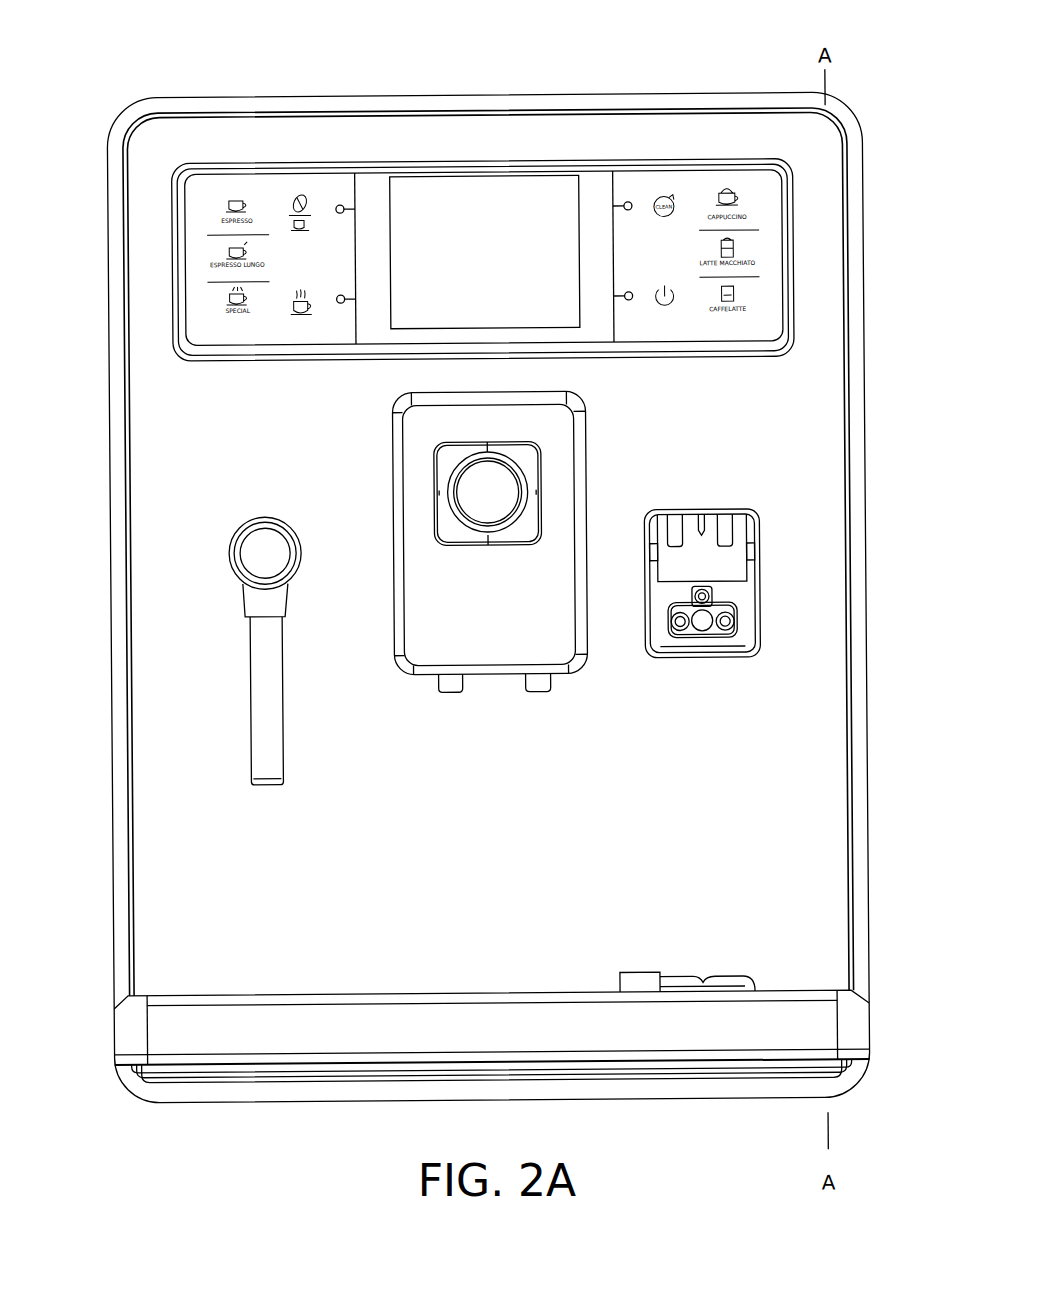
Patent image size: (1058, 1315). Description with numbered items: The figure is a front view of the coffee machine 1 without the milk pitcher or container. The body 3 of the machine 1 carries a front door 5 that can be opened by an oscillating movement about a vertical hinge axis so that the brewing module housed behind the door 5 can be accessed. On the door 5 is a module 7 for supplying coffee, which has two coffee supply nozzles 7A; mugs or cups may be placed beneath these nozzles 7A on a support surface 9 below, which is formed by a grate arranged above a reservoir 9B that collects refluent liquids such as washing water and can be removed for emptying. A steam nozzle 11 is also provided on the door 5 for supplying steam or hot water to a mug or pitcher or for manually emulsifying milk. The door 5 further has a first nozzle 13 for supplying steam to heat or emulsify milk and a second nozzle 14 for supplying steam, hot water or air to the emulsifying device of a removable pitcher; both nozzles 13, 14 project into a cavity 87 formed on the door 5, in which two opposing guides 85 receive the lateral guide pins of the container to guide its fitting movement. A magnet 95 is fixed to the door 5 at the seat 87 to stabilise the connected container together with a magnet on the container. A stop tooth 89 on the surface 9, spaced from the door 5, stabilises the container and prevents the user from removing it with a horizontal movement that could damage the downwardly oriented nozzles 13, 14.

The coffee machine 1 is at (884, 426).
The body 3 is at (866, 300).
The front door 5 is at (670, 443).
The module for supplying coffee 7 is at (481, 605).
The coffee supply nozzles 7A is at (452, 691).
The support surface 9 is at (251, 992).
The reservoir 9B is at (136, 1030).
The steam nozzle 11 is at (287, 708).
The first nozzle 13 is at (677, 536).
The second nozzle 14 is at (727, 536).
The guides 85 is at (757, 562).
The cavity 87 is at (738, 601).
The stop tooth 89 is at (678, 983).
The magnet 95 is at (708, 634).